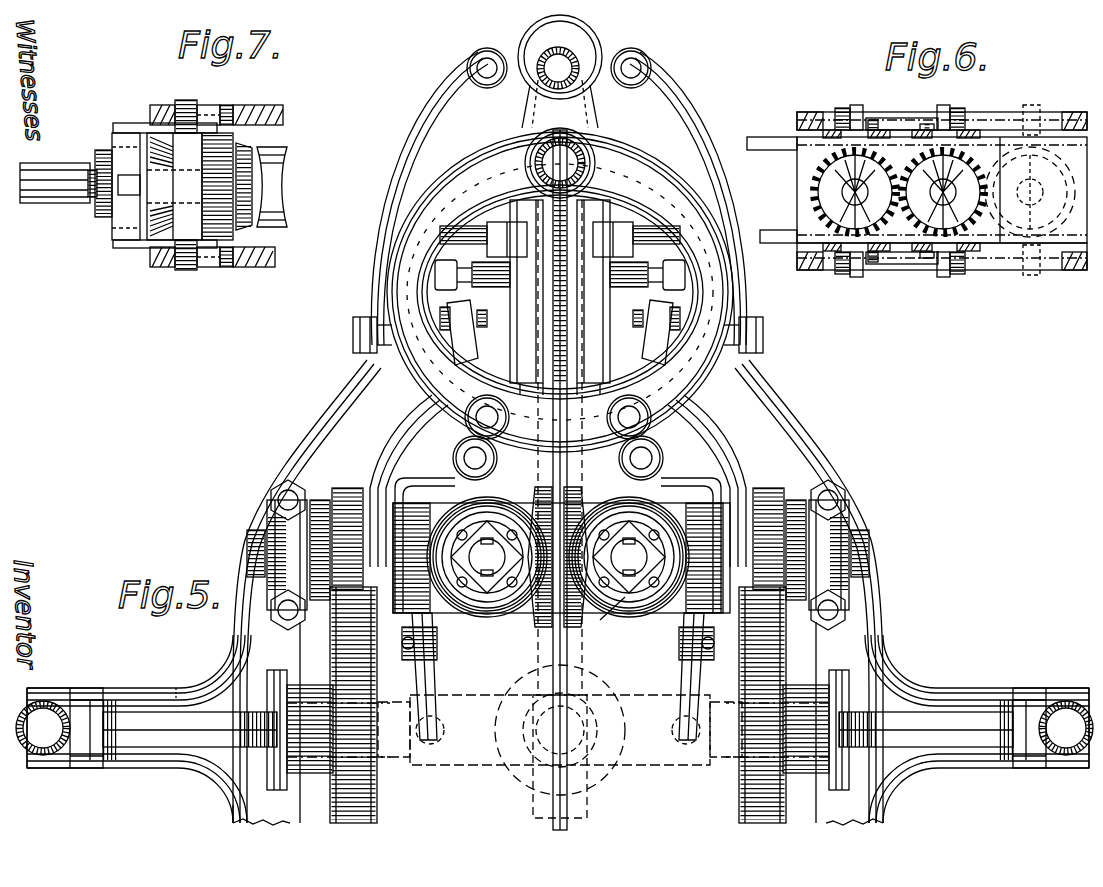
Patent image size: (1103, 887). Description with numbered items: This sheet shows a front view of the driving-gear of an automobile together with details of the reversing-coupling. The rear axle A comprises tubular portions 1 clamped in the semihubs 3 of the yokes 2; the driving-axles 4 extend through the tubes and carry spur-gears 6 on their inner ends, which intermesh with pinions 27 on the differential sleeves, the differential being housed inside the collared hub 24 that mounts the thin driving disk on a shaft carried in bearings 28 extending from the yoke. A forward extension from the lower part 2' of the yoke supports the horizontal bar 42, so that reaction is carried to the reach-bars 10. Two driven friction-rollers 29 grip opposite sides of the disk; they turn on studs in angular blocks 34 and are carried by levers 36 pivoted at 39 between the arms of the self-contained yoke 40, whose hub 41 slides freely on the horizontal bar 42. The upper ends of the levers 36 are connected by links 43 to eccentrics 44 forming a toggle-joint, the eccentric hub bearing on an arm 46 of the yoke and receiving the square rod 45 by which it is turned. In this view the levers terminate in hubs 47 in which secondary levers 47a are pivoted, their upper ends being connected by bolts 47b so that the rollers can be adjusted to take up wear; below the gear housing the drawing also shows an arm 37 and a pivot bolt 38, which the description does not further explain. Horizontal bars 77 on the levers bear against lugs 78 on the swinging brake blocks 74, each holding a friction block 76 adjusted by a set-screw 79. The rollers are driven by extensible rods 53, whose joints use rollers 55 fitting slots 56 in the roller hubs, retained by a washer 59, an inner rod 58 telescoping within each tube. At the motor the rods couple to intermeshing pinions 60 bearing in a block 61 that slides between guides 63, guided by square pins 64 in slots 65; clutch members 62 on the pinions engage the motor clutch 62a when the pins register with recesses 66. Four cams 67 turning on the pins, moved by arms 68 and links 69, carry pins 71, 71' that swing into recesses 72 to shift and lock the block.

In FIG. 5, the tubular portions 1 is at (85, 768).
In FIG. 5, the yokes 2 is at (558, 592).
In FIG. 5, the lower part of yoke 2' is at (557, 809).
In FIG. 5, the semihubs 3 is at (138, 687).
In FIG. 5, the driving-axles 4 is at (322, 780).
In FIG. 5, the spur-gears 6 is at (372, 778).
In FIG. 5, the reach-bars 10 is at (554, 728).
In FIG. 5, the collared hub 24 is at (568, 500).
In FIG. 5, the pinions 27 is at (345, 488).
In FIG. 5, the bearings 28 is at (270, 522).
In FIG. 5, the friction-rollers 29 is at (515, 500).
In FIG. 5, the angular blocks 34 is at (440, 613).
In FIG. 5, the levers 36 is at (440, 104).
In FIG. 5, the lever arm 37 is at (430, 677).
In FIG. 5, the pivot bolt 38 is at (437, 650).
In FIG. 5, the pivots 39 is at (509, 418).
In FIG. 5, the yoke 40 is at (390, 220).
In FIG. 5, the hub 41 is at (530, 163).
In FIG. 5, the horizontal bar 42 is at (585, 163).
In FIG. 5, the links 43 is at (490, 50).
In FIG. 5, the eccentrics 44 is at (580, 40).
In FIG. 5, the square rod 45 is at (558, 68).
In FIG. 5, the arm 46 is at (560, 104).
In FIG. 5, the hubs 47 is at (452, 462).
In FIG. 5, the secondary levers 47a is at (748, 446).
In FIG. 5, the bolts 47b is at (768, 336).
In FIG. 7, the extensible rods 53 is at (55, 195).
In FIG. 5, the rollers 55 is at (558, 571).
In FIG. 7, the slots 56 is at (92, 200).
In FIG. 5, the rod 58 is at (558, 559).
In FIG. 5, the washer 59 is at (546, 557).
In FIG. 7, the washer 59 is at (95, 160).
In FIG. 7, the pinions 60 is at (233, 138).
In FIG. 6, the pinions 60 is at (815, 192).
In FIG. 7, the block 61 is at (174, 186).
In FIG. 6, the block 61 is at (797, 130).
In FIG. 7, the clutch members 62 is at (253, 160).
In FIG. 6, the clutch members 62 is at (899, 192).
In FIG. 7, the clutch member on motor-shaft 62a is at (270, 205).
In FIG. 7, the guides 63 is at (270, 100).
In FIG. 6, the guides 63 is at (808, 112).
In FIG. 6, the square pins 64 is at (857, 105).
In FIG. 6, the slots 65 is at (912, 118).
In FIG. 7, the square recesses 66 is at (207, 105).
In FIG. 7, the cams 67 is at (172, 187).
In FIG. 6, the cams 67 is at (880, 130).
In FIG. 7, the arms 68 is at (145, 123).
In FIG. 7, the links 69 is at (115, 138).
In FIG. 6, the links 69 is at (770, 150).
In FIG. 7, the pins 71 is at (188, 187).
In FIG. 6, the pins 71 is at (893, 192).
In FIG. 6, the pins 71' is at (883, 195).
In FIG. 7, the recesses 72 is at (227, 105).
In FIG. 5, the swinging blocks 74 is at (561, 297).
In FIG. 5, the block of friction material 76 is at (560, 336).
In FIG. 5, the horizontal bars 77 is at (475, 225).
In FIG. 5, the lugs 78 is at (560, 239).
In FIG. 5, the set-screw 79 is at (440, 270).
In FIG. 5, the rear axle A is at (185, 686).